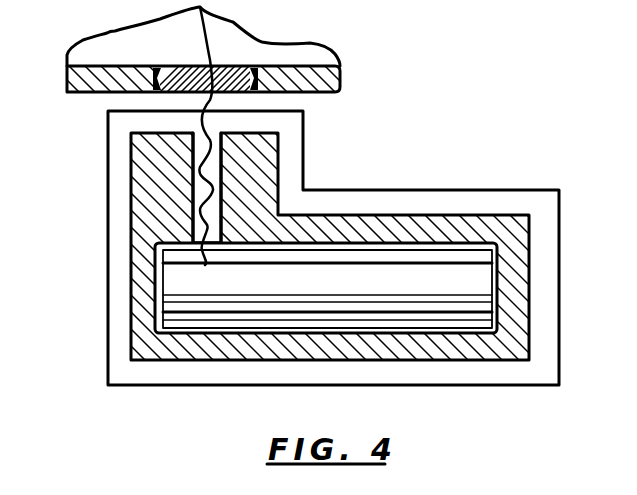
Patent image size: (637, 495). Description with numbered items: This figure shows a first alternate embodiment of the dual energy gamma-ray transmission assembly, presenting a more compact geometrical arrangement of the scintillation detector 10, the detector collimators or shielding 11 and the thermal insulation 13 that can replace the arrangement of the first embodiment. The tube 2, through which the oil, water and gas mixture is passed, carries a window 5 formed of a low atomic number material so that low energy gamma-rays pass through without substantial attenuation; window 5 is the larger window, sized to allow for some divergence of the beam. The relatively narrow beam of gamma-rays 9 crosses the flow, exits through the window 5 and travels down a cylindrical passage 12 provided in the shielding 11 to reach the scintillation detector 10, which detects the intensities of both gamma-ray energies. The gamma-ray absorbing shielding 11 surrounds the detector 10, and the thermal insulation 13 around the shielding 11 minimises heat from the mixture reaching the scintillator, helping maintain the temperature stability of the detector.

The tube 2 is at (103, 80).
The window 5 is at (222, 76).
The beam of gamma-rays 9 is at (197, 152).
The scintillation detector 10 is at (288, 303).
The shielding 11 is at (265, 160).
The cylindrical passage 12 is at (202, 203).
The thermal insulation 13 is at (372, 202).